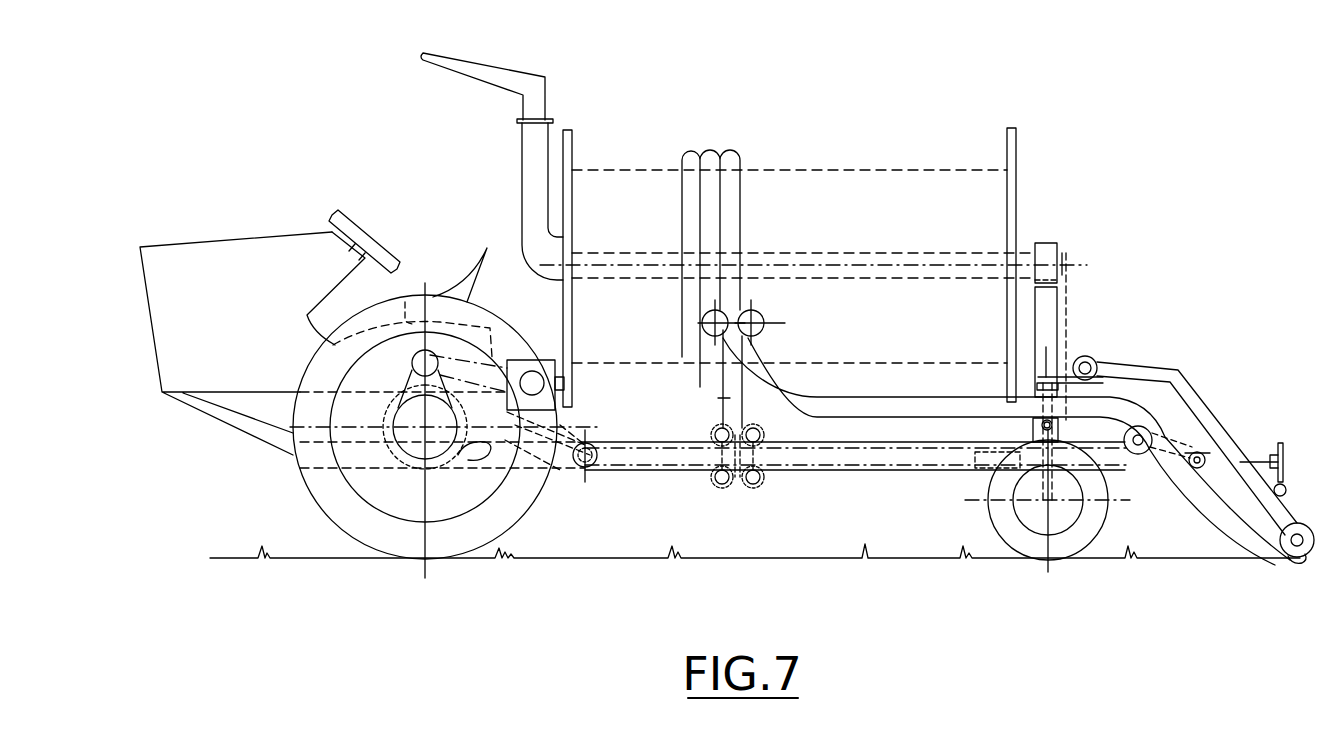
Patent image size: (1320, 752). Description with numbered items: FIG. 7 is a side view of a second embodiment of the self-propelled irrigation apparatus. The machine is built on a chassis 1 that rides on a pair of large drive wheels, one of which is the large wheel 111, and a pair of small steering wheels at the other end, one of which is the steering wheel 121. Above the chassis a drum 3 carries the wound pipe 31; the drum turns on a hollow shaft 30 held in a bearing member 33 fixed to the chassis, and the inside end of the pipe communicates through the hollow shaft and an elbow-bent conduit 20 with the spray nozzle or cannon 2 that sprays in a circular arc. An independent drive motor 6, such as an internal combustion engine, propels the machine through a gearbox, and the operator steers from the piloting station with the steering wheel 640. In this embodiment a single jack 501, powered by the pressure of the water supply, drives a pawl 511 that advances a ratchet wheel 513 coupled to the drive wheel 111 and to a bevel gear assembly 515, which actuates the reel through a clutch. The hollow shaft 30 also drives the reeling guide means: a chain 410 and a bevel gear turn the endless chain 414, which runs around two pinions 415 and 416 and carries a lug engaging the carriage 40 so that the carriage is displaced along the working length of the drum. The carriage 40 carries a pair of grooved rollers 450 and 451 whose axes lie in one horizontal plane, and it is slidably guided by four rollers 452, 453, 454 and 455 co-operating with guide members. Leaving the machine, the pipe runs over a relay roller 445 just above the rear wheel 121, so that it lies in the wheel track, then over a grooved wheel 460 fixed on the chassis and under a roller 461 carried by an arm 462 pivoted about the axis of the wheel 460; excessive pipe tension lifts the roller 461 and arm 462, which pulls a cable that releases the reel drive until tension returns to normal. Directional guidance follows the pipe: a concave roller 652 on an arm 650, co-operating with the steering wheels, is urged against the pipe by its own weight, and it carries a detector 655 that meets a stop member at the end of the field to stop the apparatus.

The chassis 1 is at (1052, 328).
The nozzle or cannon 2 is at (490, 72).
The drum 3 is at (898, 172).
The independent drive motor 6 is at (180, 245).
The elbow-bent conduit 20 is at (545, 244).
The hollow shaft 30 is at (1022, 252).
The pipe 31 is at (1210, 520).
The bearing member 33 is at (1047, 245).
The carriage 40 is at (720, 400).
The large wheel 111 is at (330, 500).
The small steering wheel 121 is at (1060, 560).
The chain 410 is at (1066, 337).
The endless chain 414 is at (645, 470).
The pinion 415 is at (590, 446).
The pinion 416 is at (978, 460).
The relay roller 445 is at (1033, 422).
The grooved roller 450 is at (703, 322).
The grooved roller 451 is at (764, 323).
The roller 452 is at (712, 436).
The roller 453 is at (715, 485).
The roller 454 is at (762, 488).
The roller 455 is at (763, 436).
The grooved wheel 460 is at (1140, 428).
The roller 461 is at (1203, 466).
The arm 462 is at (1200, 453).
The jack 501 is at (560, 468).
The pawl 511 is at (463, 463).
The ratchet wheel 513 is at (412, 450).
The bevel gear assembly 515 is at (545, 356).
The steering wheel 640 is at (350, 220).
The arm 650 is at (1198, 398).
The concave roller 652 is at (1285, 560).
The detector 655 is at (1280, 443).